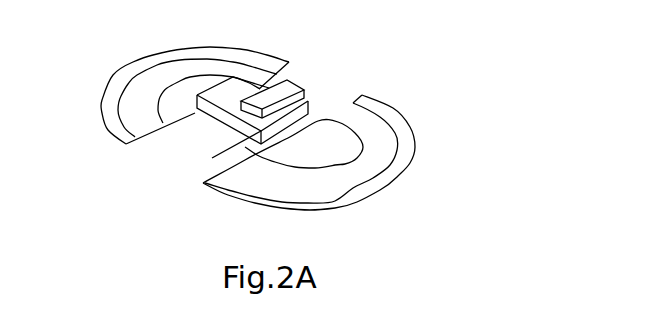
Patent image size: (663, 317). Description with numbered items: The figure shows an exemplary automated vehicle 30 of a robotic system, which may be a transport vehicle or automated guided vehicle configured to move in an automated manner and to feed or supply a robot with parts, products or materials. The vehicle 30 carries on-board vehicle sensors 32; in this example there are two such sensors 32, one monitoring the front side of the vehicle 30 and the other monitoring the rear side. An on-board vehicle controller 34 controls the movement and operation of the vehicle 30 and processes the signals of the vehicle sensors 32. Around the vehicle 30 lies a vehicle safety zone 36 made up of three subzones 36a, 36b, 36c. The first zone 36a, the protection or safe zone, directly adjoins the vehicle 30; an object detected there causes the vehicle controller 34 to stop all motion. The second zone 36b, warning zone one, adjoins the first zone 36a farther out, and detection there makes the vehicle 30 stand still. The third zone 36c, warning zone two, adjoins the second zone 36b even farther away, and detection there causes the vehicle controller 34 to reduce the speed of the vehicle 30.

The automated vehicle 30 is at (404, 81).
The vehicle sensor 32 is at (318, 103).
The vehicle controller 34 is at (302, 78).
The vehicle safety zone 36 is at (420, 117).
The first zone 36a is at (212, 158).
The second zone 36b is at (378, 162).
The third zone 36c is at (372, 195).